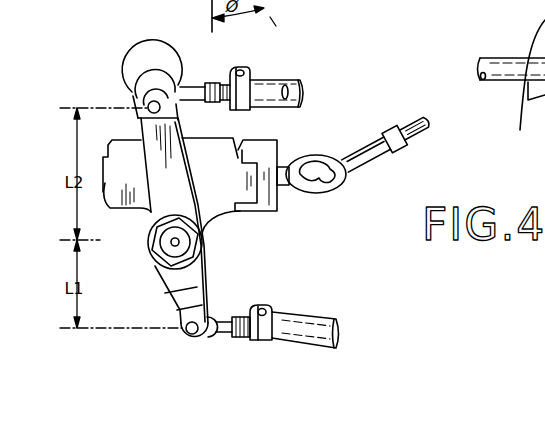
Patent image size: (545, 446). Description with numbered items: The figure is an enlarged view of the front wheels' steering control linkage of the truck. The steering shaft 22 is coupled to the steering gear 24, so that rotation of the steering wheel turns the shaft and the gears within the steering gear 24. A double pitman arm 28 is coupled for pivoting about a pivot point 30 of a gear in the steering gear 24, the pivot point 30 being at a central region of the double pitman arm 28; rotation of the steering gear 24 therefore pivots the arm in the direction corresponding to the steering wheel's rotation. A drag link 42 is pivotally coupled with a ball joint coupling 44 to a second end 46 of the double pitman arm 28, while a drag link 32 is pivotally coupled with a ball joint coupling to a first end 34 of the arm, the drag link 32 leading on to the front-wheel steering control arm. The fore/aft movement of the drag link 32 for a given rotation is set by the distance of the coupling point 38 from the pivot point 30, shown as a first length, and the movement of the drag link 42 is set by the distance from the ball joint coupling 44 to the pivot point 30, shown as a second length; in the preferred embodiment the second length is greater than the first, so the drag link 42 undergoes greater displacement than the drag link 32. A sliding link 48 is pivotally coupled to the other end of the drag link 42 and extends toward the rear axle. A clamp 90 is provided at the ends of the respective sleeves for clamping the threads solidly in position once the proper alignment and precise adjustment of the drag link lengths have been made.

The steering shaft 22 is at (383, 153).
The steering gear 24 is at (174, 240).
The double pitman arm 28 is at (170, 187).
The pivot point 30 is at (174, 244).
The drag link 32 is at (276, 342).
The first end 34 is at (182, 328).
The coupling point 38 is at (214, 318).
The drag link 42 is at (268, 80).
The ball joint coupling 44 is at (140, 80).
The second end 46 is at (146, 98).
The sliding link 48 is at (512, 87).
The clamp 90 is at (247, 70).